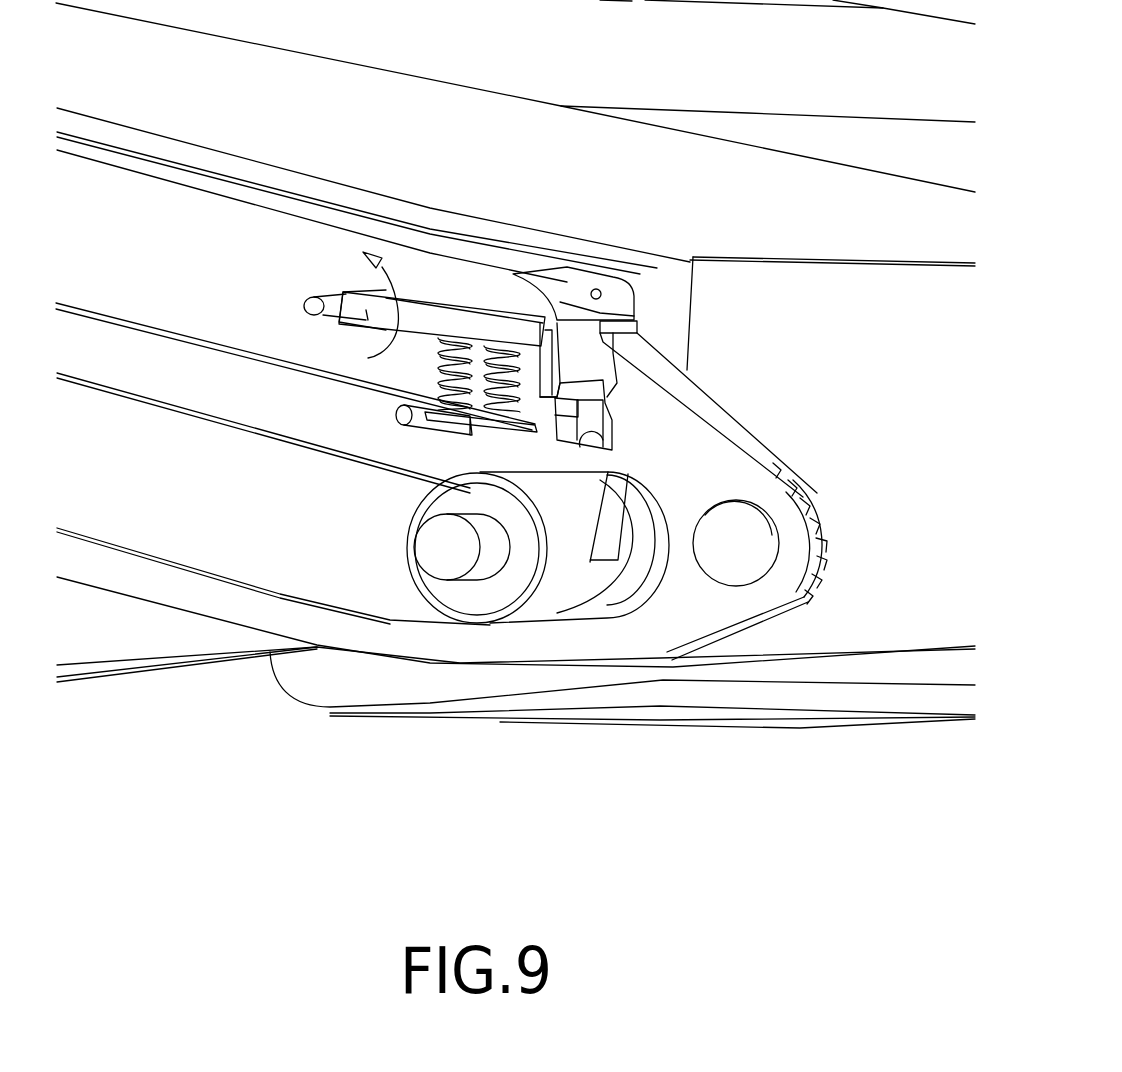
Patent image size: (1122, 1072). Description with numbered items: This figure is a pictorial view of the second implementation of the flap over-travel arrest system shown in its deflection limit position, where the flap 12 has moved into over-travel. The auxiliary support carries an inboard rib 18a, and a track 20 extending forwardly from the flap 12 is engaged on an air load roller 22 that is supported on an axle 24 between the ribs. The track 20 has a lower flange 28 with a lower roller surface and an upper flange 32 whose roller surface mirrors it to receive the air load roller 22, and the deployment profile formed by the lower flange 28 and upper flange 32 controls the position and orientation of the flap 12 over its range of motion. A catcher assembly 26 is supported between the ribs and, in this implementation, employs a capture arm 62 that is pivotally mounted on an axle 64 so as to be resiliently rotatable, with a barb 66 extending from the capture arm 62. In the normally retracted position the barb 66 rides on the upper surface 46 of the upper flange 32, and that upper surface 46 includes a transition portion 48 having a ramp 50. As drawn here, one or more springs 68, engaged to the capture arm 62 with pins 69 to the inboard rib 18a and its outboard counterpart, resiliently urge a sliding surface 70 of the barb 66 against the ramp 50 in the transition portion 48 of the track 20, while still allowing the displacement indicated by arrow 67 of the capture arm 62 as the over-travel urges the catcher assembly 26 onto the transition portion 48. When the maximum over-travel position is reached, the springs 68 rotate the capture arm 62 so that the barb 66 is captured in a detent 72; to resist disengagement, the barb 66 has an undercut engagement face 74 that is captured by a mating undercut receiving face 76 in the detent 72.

The flap 12 is at (788, 680).
The inboard rib 18a is at (177, 167).
The track 20 is at (677, 620).
The air load roller 22 is at (413, 546).
The axle 24 is at (442, 553).
The catcher assembly 26 is at (653, 283).
The lower flange 28 is at (210, 553).
The upper flange 32 is at (113, 317).
The upper surface 46 is at (200, 345).
The transition portion 48 is at (530, 430).
The ramp 50 is at (539, 402).
The capture arm 62 is at (458, 307).
The axle 64 is at (313, 302).
The barb 66 is at (553, 350).
The arrow 67 is at (392, 307).
The springs 68 is at (452, 362).
The pins 69 is at (397, 417).
The sliding surface 70 is at (578, 391).
The detent 72 is at (583, 440).
The undercut engagement face 74 is at (485, 372).
The undercut receiving face 76 is at (565, 423).